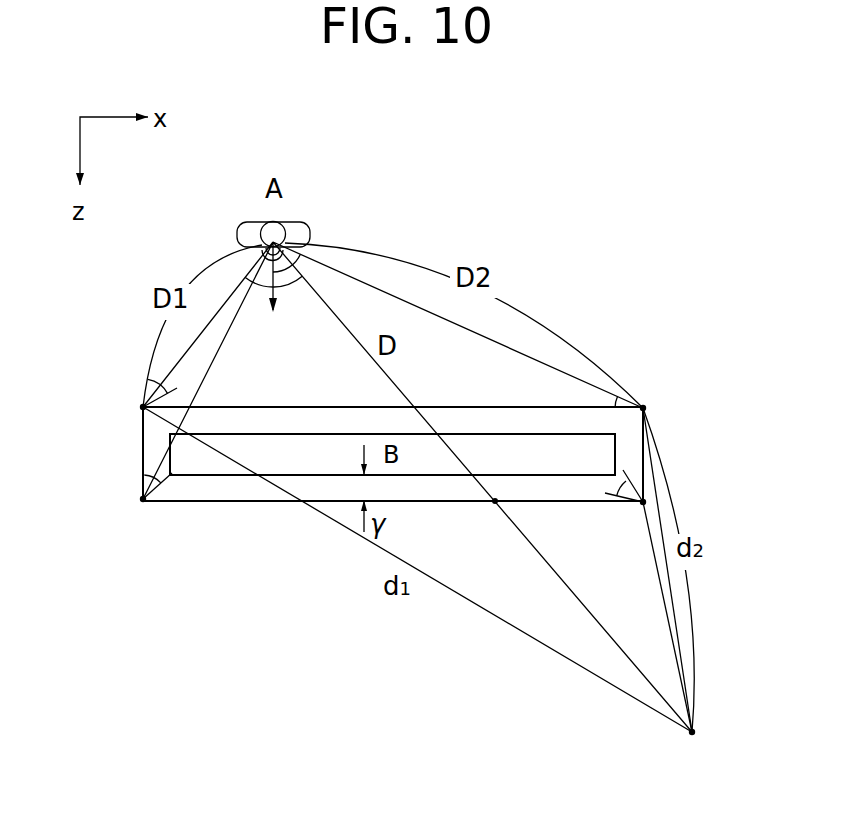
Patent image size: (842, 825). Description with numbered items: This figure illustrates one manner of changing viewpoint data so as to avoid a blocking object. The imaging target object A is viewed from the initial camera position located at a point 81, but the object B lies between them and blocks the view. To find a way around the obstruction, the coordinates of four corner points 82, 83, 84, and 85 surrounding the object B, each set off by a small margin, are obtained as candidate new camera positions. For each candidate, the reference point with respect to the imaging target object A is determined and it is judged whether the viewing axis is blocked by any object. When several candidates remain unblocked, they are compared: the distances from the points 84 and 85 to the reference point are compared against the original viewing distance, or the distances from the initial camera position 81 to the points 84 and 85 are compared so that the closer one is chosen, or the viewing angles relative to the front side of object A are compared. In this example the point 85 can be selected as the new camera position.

The initial camera position 81 is at (706, 742).
The corner point 82 is at (132, 512).
The corner point 83 is at (634, 517).
The corner point 84 is at (130, 397).
The corner point 85 is at (655, 397).